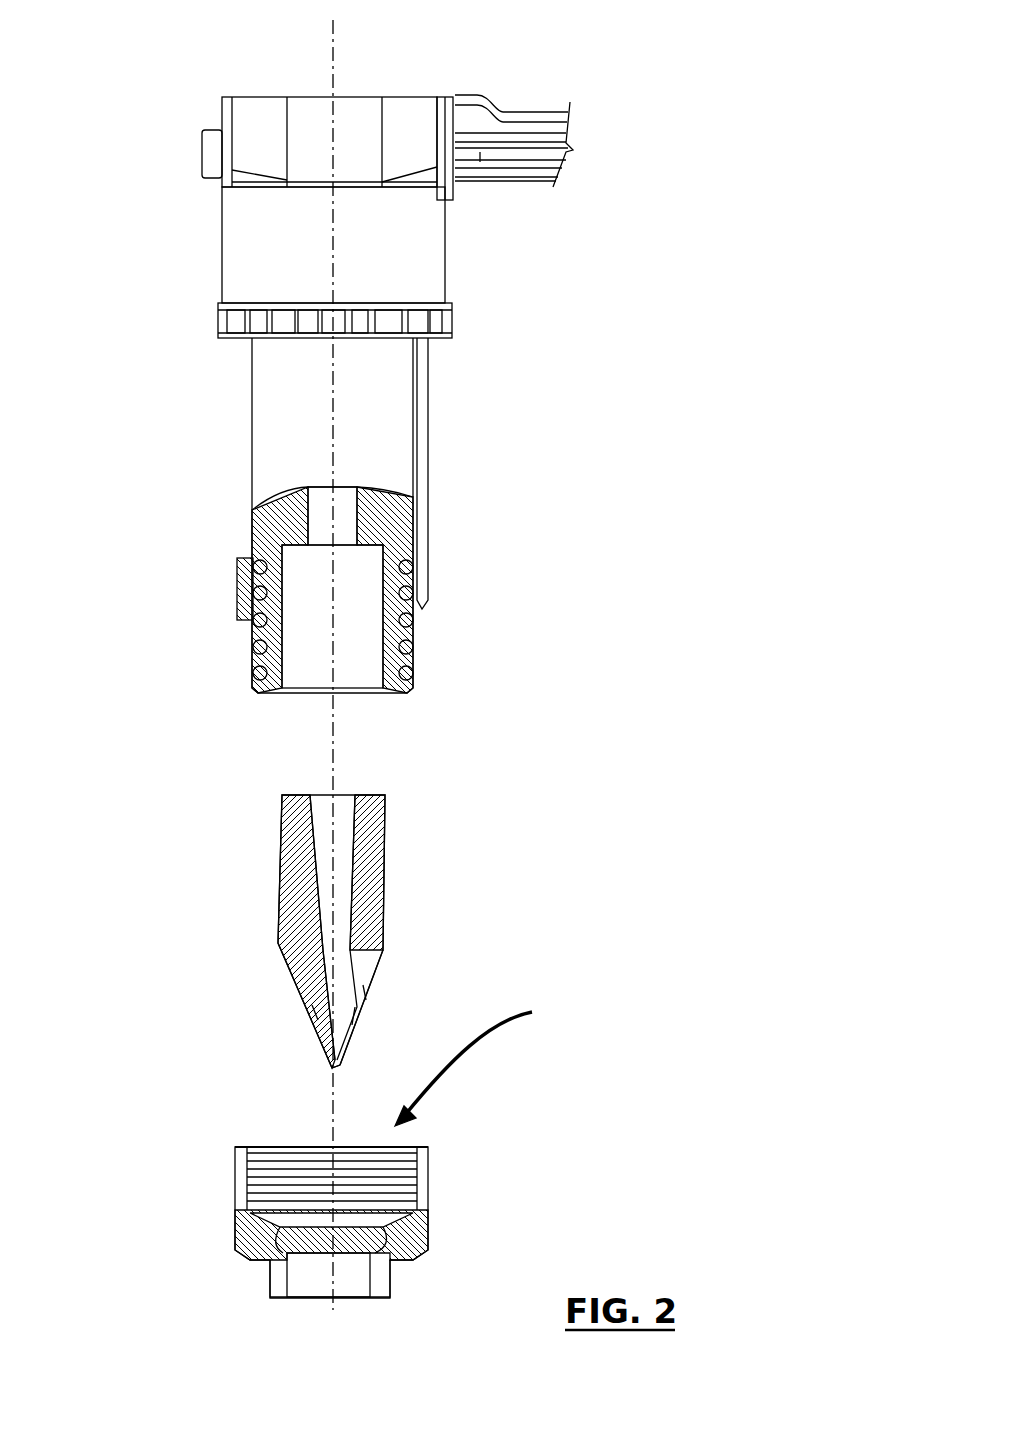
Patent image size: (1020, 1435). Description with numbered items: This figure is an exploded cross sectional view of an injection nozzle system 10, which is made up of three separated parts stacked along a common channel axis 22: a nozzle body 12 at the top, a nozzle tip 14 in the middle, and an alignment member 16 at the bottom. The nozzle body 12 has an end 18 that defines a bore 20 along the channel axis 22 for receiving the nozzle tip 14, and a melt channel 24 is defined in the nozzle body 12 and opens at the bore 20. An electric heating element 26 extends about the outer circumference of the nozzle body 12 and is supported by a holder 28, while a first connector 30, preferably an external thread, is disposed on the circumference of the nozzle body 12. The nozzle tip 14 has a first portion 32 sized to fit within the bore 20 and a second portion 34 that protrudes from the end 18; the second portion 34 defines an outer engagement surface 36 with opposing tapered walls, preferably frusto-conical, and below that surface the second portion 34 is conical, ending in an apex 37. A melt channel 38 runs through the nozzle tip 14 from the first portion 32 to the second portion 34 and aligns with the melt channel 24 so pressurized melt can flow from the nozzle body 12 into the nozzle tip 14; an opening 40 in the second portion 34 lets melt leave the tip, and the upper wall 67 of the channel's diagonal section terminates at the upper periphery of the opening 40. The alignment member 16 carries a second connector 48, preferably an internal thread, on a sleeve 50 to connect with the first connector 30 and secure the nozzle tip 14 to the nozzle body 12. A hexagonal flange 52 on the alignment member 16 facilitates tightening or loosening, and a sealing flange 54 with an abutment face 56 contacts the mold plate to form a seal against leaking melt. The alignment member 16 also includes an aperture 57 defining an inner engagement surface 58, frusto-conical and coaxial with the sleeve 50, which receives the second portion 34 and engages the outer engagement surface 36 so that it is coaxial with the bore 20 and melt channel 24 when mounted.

The injection nozzle system 10 is at (604, 446).
The nozzle body 12 is at (397, 403).
The nozzle tip 14 is at (282, 858).
The alignment member 16 is at (265, 1148).
The end 18 is at (420, 660).
The bore 20 is at (358, 680).
The channel axis 22 is at (338, 64).
The melt channel 24 is at (313, 522).
The electric heating element 26 is at (383, 603).
The holder 28 is at (238, 587).
The first connector 30 is at (422, 627).
The first portion 32 is at (385, 853).
The second portion 34 is at (312, 1005).
The outer engagement surface 36 is at (283, 953).
The apex 37 is at (335, 1068).
The melt channel 38 is at (338, 800).
The opening 40 is at (355, 1007).
The second connector 48 is at (247, 1170).
The sleeve 50 is at (427, 1147).
The hexagonal flange 52 is at (237, 1240).
The sealing flange 54 is at (313, 1300).
The abutment face 56 is at (260, 1298).
The aperture 57 is at (490, 1065).
The inner engagement surface 58 is at (272, 1277).
The upper wall 67 is at (363, 985).